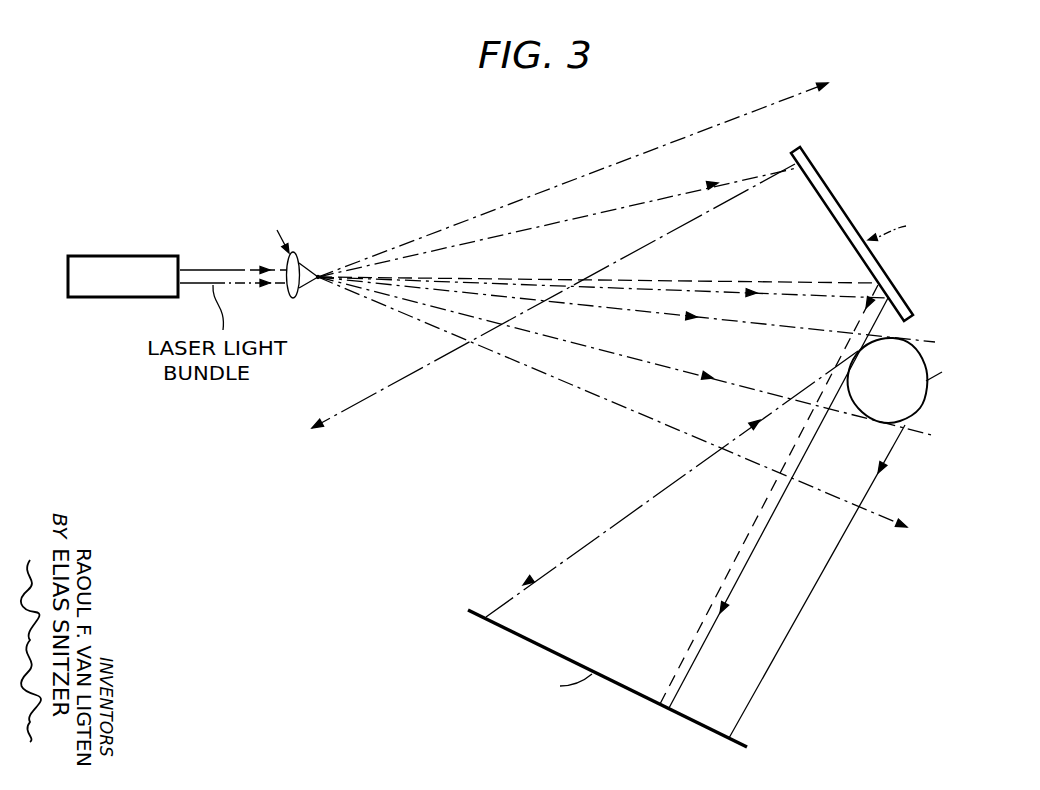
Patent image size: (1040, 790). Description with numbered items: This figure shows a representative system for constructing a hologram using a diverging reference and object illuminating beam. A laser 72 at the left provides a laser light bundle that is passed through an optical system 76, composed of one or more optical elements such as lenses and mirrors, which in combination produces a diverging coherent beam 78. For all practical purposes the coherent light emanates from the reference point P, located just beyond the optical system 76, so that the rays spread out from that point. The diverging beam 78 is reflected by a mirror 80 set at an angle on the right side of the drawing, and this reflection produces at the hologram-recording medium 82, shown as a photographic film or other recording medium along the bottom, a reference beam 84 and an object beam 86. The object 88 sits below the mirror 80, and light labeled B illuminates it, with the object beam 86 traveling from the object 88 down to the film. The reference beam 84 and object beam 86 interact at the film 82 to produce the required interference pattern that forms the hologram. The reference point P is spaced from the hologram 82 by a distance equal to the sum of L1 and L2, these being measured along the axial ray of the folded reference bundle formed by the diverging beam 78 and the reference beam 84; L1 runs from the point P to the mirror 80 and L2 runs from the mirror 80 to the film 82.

The laser 72 is at (131, 256).
The optical system 76 is at (300, 258).
The diverging coherent beam 78 is at (531, 196).
The mirror 80 is at (813, 197).
The hologram-recording medium 82 is at (637, 694).
The reference beam 84 is at (736, 582).
The object beam 86 is at (898, 454).
The object 88 is at (924, 409).
The reference point P is at (316, 280).
The axial distance L1 is at (524, 278).
The axial distance L2 is at (747, 534).
The object illuminating beam B is at (626, 356).